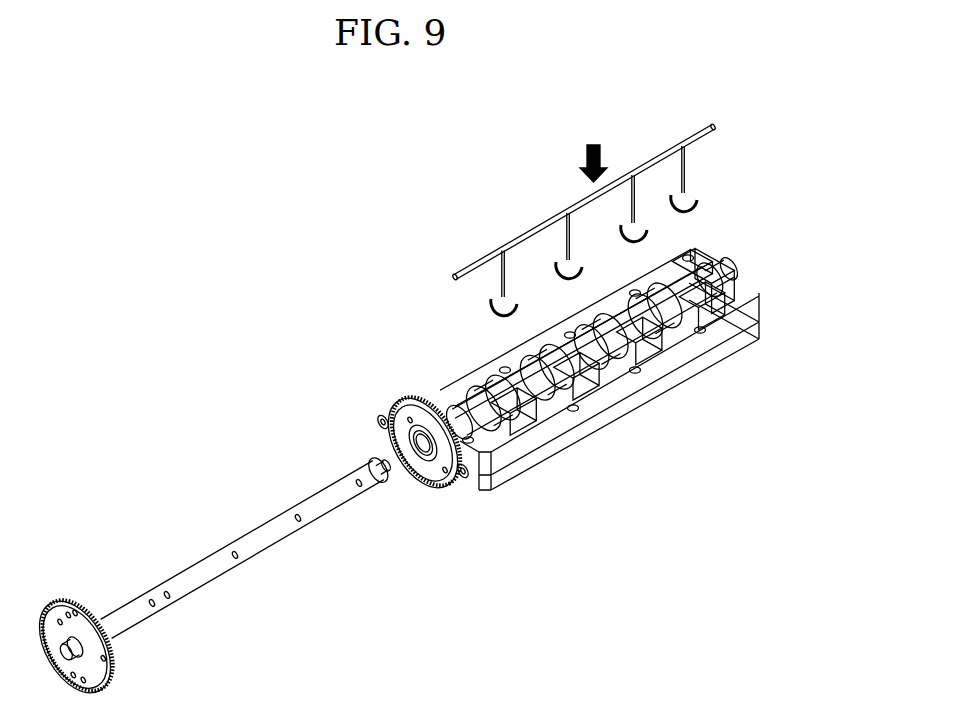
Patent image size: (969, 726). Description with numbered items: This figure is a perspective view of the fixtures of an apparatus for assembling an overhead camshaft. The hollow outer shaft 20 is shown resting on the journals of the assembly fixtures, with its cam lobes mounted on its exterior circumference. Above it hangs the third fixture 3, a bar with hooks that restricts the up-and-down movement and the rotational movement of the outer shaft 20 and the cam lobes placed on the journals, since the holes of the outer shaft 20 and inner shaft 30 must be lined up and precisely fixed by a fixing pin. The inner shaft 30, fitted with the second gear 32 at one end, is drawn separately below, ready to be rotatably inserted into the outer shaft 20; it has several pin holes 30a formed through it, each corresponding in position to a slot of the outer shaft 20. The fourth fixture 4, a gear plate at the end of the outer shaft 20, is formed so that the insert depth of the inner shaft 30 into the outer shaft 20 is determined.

The third fixture 3 is at (513, 215).
The fourth fixture 4 is at (377, 418).
The outer shaft 20 is at (578, 373).
The inner shaft 30 is at (247, 555).
The pin hole 30a is at (361, 486).
The second gear 32 is at (70, 603).